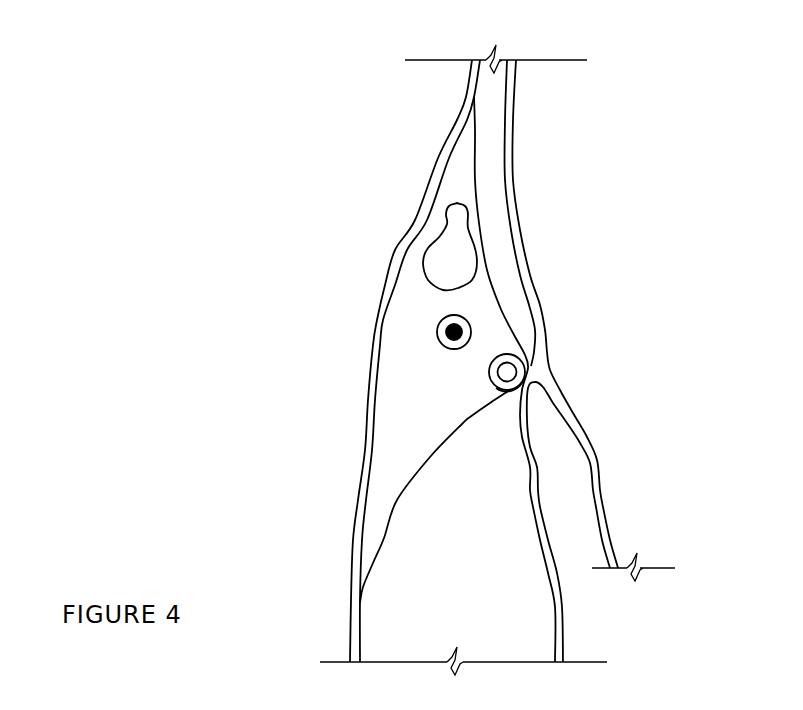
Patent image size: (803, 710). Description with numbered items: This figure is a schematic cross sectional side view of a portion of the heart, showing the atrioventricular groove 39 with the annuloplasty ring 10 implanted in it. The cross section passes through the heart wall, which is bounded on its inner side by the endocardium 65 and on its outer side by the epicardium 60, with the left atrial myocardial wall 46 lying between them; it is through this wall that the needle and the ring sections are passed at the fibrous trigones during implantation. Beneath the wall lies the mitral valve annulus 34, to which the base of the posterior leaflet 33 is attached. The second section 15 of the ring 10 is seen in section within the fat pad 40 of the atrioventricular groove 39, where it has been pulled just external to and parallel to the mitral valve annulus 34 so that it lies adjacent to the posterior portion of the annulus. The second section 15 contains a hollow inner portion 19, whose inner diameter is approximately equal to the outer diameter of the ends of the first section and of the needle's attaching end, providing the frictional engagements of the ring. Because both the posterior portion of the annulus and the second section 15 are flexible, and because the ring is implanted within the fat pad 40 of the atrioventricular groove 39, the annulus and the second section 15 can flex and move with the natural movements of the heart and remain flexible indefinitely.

The annuloplasty ring 10 is at (487, 373).
The second section 15 is at (499, 386).
The hollow inner portion 19 is at (490, 362).
The posterior leaflet 33 is at (597, 493).
The mitral valve annulus 34 is at (541, 372).
The atrioventricular groove 39 is at (415, 220).
The fat pad 40 is at (412, 463).
The left atrial myocardial wall 46 is at (485, 120).
The epicardium 60 is at (438, 158).
The endocardium 65 is at (515, 105).